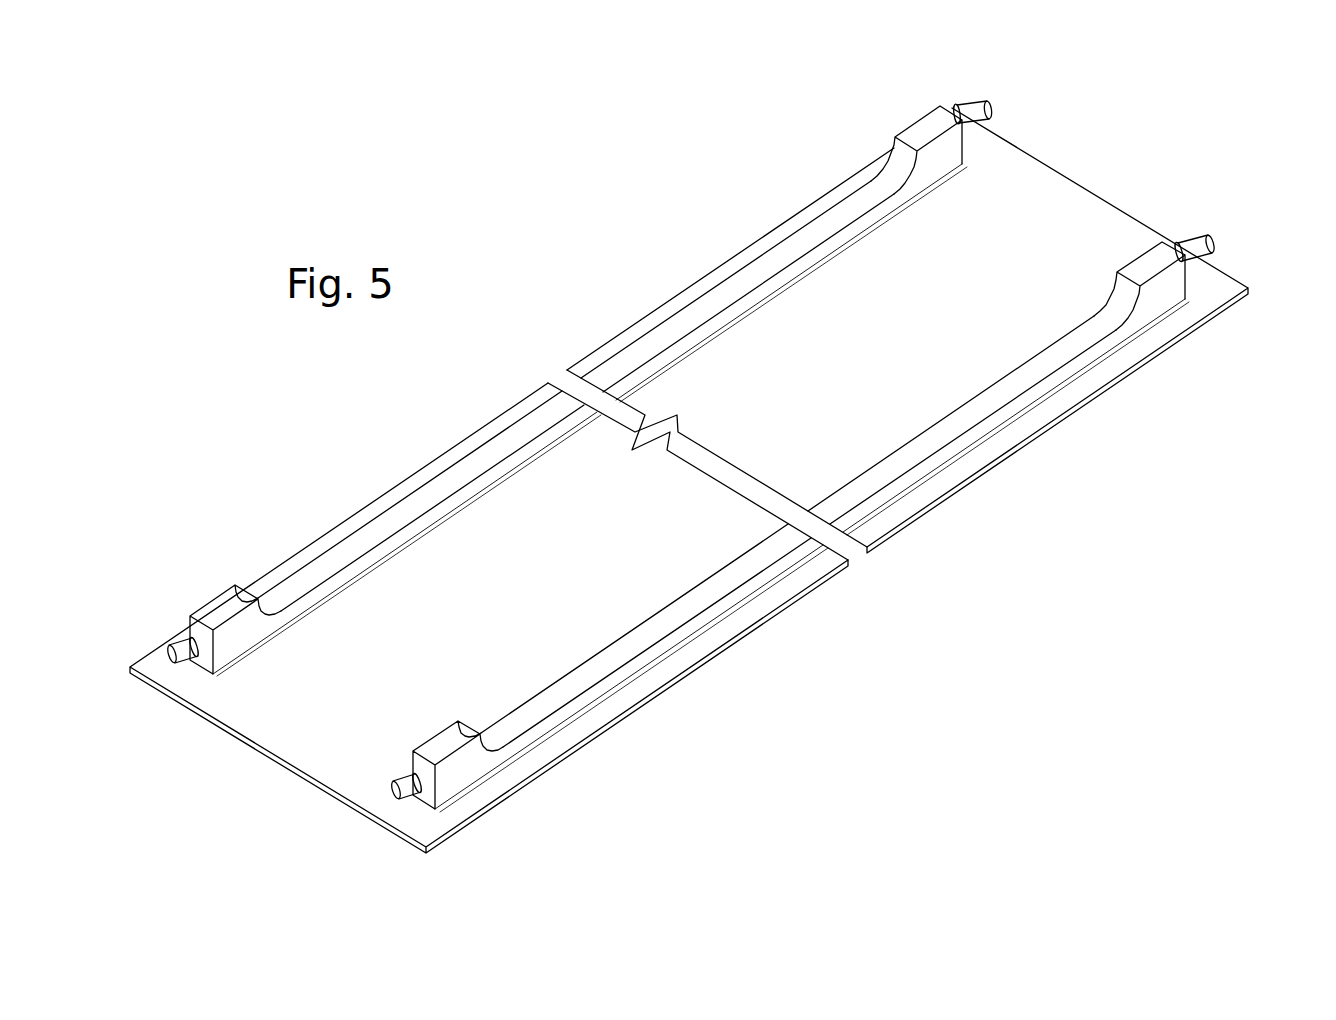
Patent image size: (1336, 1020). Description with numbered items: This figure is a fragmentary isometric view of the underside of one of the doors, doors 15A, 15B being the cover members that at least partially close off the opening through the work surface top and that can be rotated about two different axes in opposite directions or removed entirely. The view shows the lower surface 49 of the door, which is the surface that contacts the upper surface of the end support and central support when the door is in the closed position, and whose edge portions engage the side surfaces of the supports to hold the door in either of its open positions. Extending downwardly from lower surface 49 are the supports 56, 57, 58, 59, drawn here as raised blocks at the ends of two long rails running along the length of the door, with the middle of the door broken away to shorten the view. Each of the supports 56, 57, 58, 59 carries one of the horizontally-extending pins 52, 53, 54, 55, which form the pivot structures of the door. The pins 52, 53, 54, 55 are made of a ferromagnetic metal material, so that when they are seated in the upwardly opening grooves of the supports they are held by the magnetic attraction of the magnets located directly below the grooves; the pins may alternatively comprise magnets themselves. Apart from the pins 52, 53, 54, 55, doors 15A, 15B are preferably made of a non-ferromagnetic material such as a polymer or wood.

The lower surface 49 is at (1105, 227).
The door 15A is at (638, 359).
The door 15B is at (778, 528).
The pin 52 is at (990, 104).
The pin 53 is at (1213, 239).
The pin 54 is at (395, 793).
The pin 55 is at (186, 642).
The support 56 is at (927, 130).
The support 57 is at (1155, 262).
The support 58 is at (405, 742).
The support 59 is at (205, 603).